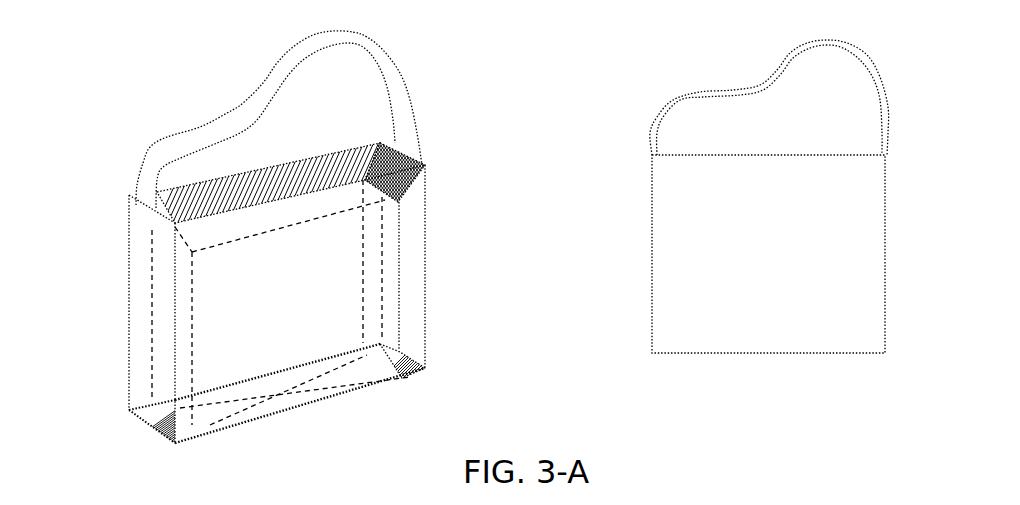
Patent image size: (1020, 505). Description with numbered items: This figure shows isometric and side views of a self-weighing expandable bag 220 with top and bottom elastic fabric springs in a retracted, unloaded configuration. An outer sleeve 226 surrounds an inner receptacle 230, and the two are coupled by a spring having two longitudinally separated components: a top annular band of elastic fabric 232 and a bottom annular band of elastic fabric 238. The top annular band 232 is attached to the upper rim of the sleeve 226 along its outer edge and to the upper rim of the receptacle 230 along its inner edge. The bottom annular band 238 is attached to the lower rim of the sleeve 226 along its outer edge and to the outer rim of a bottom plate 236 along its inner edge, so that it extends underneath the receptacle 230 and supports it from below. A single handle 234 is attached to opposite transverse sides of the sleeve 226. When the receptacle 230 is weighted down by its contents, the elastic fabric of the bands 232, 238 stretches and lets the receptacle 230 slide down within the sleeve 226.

The self-weighing expandable bag 220 is at (138, 122).
The outer sleeve 226 is at (130, 306).
The inner receptacle 230 is at (403, 277).
The top annular band of elastic fabric 232 is at (287, 178).
The handle 234 is at (272, 58).
The bottom plate 236 is at (290, 398).
The bottom annular band of elastic fabric 238 is at (153, 423).